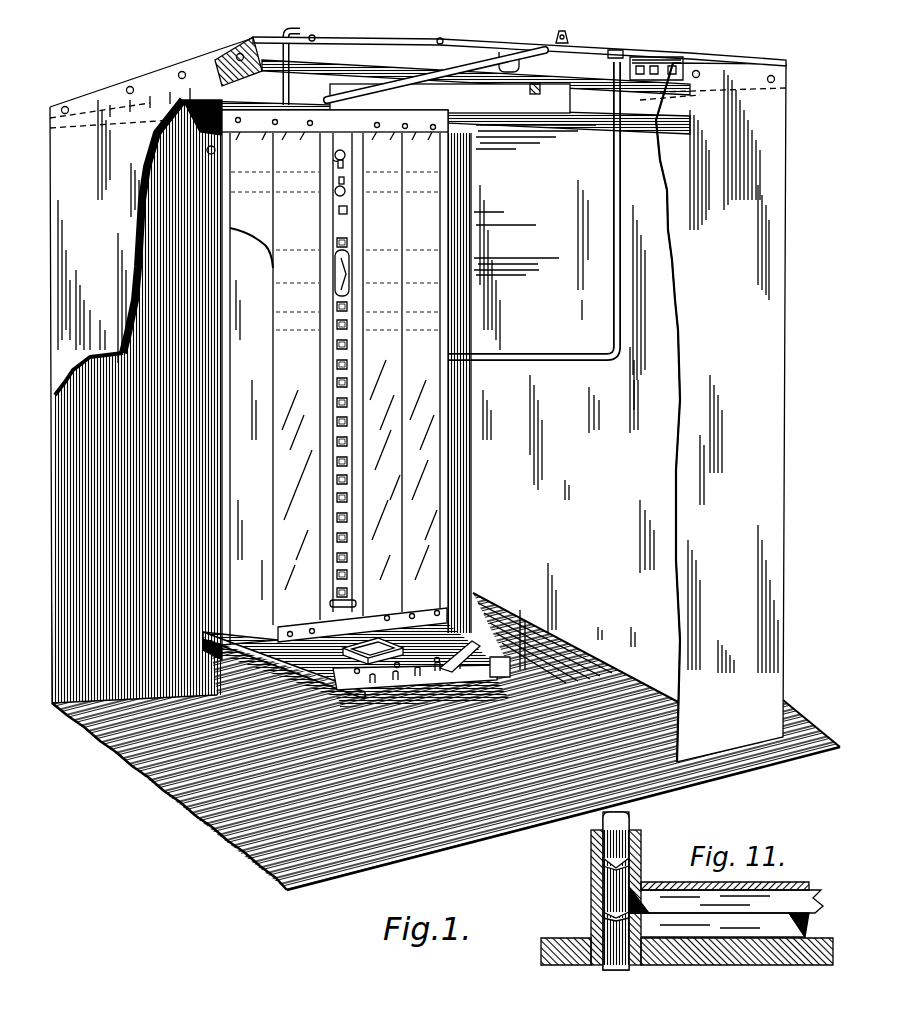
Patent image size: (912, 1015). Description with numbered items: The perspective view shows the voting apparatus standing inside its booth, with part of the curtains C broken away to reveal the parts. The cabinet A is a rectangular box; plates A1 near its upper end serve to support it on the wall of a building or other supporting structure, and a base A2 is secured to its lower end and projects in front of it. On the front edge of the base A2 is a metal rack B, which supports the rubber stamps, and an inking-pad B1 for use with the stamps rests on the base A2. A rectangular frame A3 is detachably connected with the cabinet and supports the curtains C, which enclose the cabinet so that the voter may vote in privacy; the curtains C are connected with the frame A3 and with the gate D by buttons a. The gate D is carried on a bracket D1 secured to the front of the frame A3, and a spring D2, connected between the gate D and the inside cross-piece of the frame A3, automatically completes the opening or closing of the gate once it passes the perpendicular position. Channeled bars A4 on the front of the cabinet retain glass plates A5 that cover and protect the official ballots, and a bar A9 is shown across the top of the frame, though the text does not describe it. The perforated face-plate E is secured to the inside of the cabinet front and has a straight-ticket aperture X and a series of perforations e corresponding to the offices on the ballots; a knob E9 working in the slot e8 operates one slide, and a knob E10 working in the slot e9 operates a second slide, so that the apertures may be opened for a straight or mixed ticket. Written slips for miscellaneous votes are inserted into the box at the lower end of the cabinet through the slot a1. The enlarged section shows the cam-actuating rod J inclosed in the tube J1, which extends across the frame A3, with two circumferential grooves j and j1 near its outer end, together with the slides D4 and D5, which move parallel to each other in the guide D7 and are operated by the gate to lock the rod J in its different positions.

In FIG. 1, the cabinet A is at (346, 368).
In FIG. 1, the plates A1 is at (208, 155).
In FIG. 1, the base A2 is at (350, 665).
In FIG. 1, the rectangular frame A3 is at (262, 55).
In FIG. 11, the rectangular frame A3 is at (739, 962).
In FIG. 1, the channeled bars A4 is at (283, 631).
In FIG. 1, the glass plates A5 is at (359, 475).
In FIG. 1, the brace bar A9 is at (352, 82).
In FIG. 1, the buttons a is at (769, 77).
In FIG. 1, the slot a1 is at (356, 606).
In FIG. 1, the metal rack B is at (470, 662).
In FIG. 1, the inking-pad B1 is at (403, 651).
In FIG. 1, the curtains C is at (418, 400).
In FIG. 1, the gate D is at (612, 322).
In FIG. 1, the bracket D1 is at (670, 70).
In FIG. 1, the spring D2 is at (562, 31).
In FIG. 11, the slide D4 is at (777, 900).
In FIG. 11, the slide D5 is at (766, 925).
In FIG. 11, the guide D7 is at (812, 922).
In FIG. 1, the perforated face-plate E is at (346, 372).
In FIG. 1, the knob E9 is at (334, 152).
In FIG. 1, the knob E10 is at (345, 186).
In FIG. 1, the perforations e is at (347, 440).
In FIG. 1, the slot e8 is at (333, 155).
In FIG. 1, the slot e9 is at (350, 202).
In FIG. 1, the straight-ticket aperture X is at (340, 212).
In FIG. 11, the rod J is at (608, 843).
In FIG. 11, the tube J1 is at (592, 890).
In FIG. 11, the circumferential groove j is at (600, 918).
In FIG. 11, the circumferential groove j1 is at (631, 862).